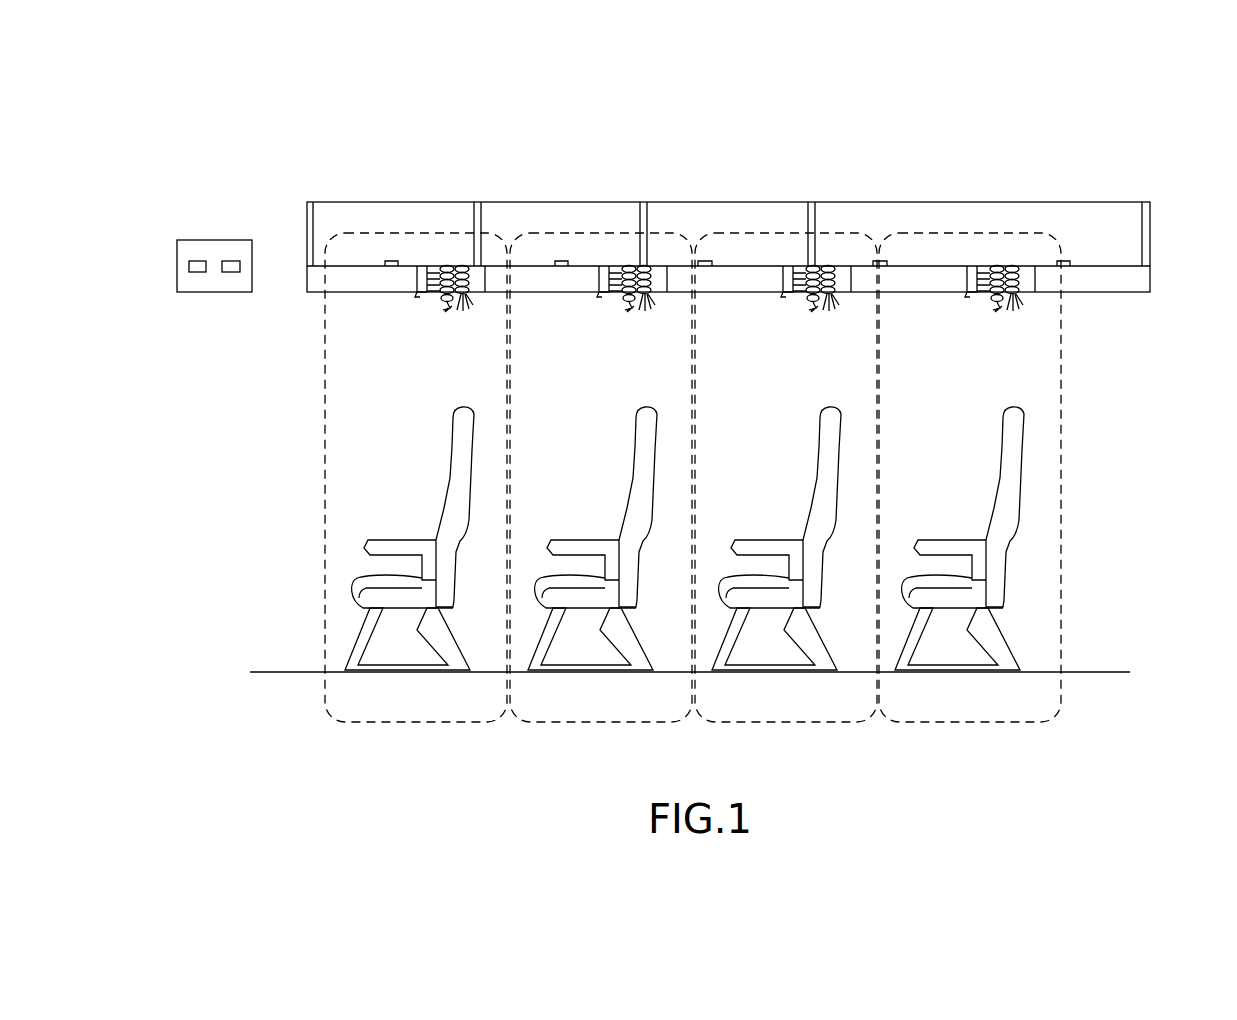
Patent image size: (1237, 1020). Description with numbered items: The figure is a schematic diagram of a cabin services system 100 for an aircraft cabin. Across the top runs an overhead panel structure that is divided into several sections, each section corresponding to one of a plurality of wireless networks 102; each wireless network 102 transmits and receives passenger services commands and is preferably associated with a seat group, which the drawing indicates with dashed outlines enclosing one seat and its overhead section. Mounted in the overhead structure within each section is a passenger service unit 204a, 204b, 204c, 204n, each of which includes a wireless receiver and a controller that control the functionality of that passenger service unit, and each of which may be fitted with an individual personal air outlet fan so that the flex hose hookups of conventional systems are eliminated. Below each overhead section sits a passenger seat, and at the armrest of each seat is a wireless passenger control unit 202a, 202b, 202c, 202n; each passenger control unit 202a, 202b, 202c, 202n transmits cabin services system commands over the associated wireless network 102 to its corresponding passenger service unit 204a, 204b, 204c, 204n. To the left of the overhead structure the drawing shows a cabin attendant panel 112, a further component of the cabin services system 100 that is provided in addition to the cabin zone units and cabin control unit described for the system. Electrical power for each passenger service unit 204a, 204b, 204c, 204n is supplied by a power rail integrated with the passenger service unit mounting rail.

The cabin services system 100 is at (1134, 96).
The wireless network 102 is at (352, 233).
The cabin attendant panel 112 is at (222, 240).
The wireless passenger control unit 202a is at (384, 536).
The wireless passenger control unit 202b is at (567, 536).
The wireless passenger control unit 202c is at (751, 536).
The wireless passenger control unit 202n is at (934, 536).
The passenger service unit 204a is at (432, 265).
The passenger service unit 204b is at (613, 265).
The passenger service unit 204c is at (798, 265).
The passenger service unit 204n is at (996, 265).